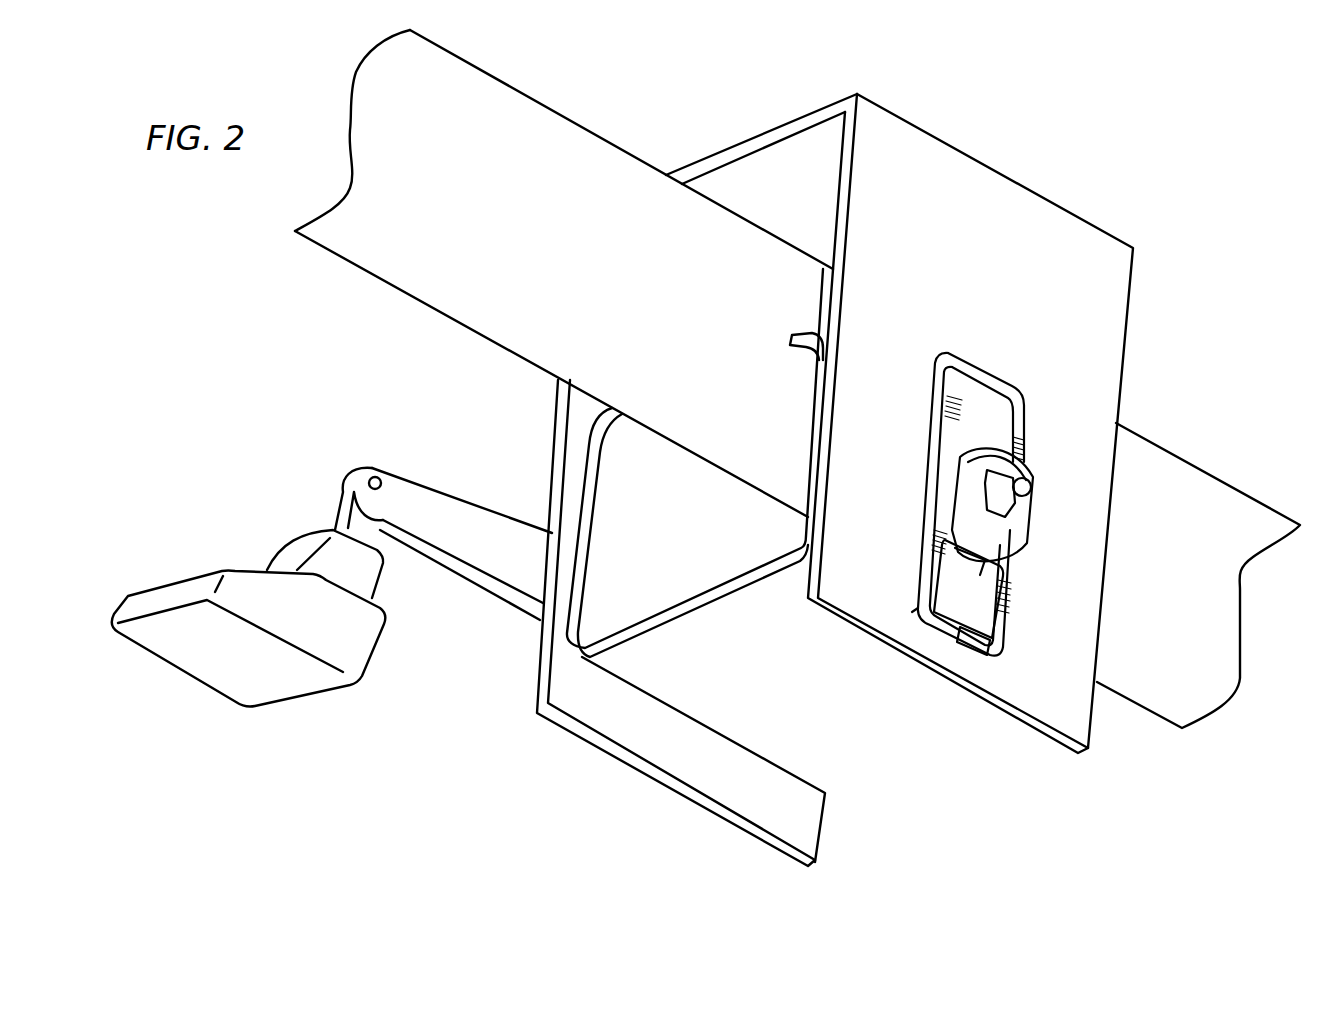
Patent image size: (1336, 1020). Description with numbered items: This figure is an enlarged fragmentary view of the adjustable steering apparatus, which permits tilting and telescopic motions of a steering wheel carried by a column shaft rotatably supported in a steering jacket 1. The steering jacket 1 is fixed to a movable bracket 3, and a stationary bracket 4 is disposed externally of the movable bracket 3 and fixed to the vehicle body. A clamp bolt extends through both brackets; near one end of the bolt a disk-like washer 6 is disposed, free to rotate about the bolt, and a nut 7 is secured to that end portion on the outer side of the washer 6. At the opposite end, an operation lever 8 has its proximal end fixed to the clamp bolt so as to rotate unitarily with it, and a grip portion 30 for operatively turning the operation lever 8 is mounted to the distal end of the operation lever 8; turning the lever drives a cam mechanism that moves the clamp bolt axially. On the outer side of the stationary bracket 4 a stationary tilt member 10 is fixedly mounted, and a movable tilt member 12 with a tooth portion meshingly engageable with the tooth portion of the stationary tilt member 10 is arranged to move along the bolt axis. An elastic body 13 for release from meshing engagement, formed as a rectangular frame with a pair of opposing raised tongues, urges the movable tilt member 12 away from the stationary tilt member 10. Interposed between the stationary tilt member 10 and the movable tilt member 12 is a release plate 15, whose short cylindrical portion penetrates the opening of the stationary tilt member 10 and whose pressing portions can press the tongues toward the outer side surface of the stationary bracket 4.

The steering jacket 1 is at (590, 153).
The movable bracket 3 is at (834, 770).
The stationary bracket 4 is at (1063, 228).
The washer 6 is at (1022, 523).
The nut 7 is at (1023, 453).
The operation lever 8 is at (490, 555).
The stationary tilt member 10 is at (930, 535).
The movable tilt member 12 is at (975, 433).
The elastic body for release from meshing engagement 13 is at (967, 625).
The release plate 15 is at (993, 652).
The grip portion 30 is at (227, 672).